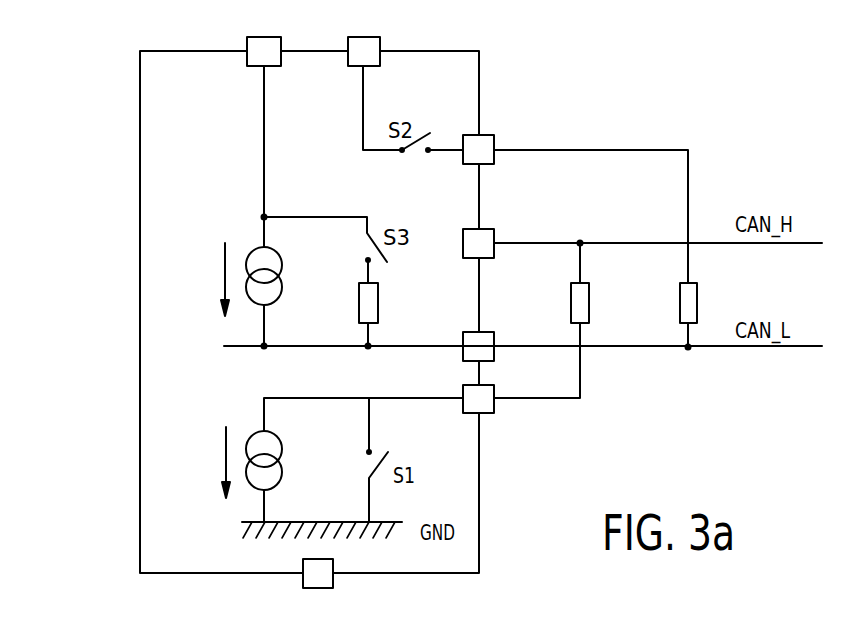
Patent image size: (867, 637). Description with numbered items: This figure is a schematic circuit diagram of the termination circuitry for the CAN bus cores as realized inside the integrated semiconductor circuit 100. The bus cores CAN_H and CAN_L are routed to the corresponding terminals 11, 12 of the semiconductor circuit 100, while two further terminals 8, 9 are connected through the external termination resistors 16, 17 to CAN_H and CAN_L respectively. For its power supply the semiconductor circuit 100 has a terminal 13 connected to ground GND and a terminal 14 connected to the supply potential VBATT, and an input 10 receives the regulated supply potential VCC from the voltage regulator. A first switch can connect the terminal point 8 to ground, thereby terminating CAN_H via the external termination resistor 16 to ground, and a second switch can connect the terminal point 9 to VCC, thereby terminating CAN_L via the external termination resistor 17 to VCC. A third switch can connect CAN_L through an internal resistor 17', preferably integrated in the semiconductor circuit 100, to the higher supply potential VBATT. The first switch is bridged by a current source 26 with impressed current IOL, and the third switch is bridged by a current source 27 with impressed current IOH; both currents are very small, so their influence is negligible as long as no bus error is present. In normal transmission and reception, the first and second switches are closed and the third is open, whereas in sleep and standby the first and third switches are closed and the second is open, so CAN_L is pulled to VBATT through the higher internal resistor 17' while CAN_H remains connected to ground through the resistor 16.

The integrated semiconductor circuit 100 is at (140, 259).
The terminal connected to VBATT 14 is at (250, 39).
The input 10 is at (381, 43).
The terminal point 9 is at (492, 134).
The CAN_H terminal 11 is at (494, 229).
The CAN_L terminal 12 is at (494, 332).
The terminal point 8 is at (495, 413).
The termination resistor 16 is at (589, 300).
The termination resistor 17 is at (725, 297).
The internal resistor 17' is at (342, 293).
The current source 27 is at (249, 252).
The current source 26 is at (256, 440).
The ground terminal 13 is at (333, 578).